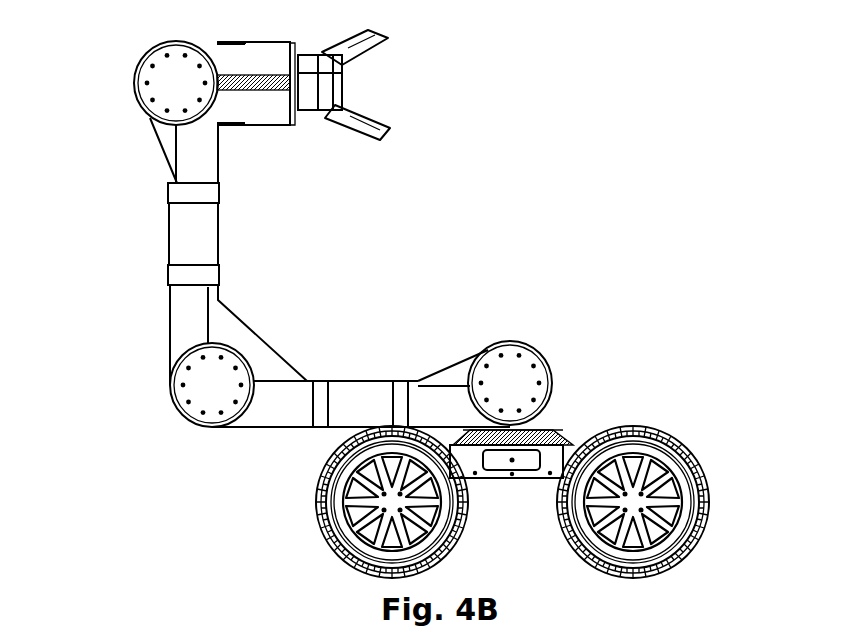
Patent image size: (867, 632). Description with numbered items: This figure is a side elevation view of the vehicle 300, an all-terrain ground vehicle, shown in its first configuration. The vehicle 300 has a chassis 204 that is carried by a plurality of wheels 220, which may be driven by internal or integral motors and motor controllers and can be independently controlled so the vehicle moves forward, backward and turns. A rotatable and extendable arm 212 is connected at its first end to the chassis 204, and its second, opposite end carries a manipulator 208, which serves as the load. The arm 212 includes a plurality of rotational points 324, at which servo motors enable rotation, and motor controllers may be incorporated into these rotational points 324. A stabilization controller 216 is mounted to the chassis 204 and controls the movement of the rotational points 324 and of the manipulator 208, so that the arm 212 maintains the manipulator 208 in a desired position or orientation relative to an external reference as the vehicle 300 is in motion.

The vehicle 300 is at (675, 125).
The manipulator 208 is at (330, 87).
The arm 212 is at (207, 227).
The rotational points 324 is at (150, 102).
The chassis 204 is at (567, 447).
The stabilization controller 216 is at (493, 460).
The wheels 220 is at (316, 500).